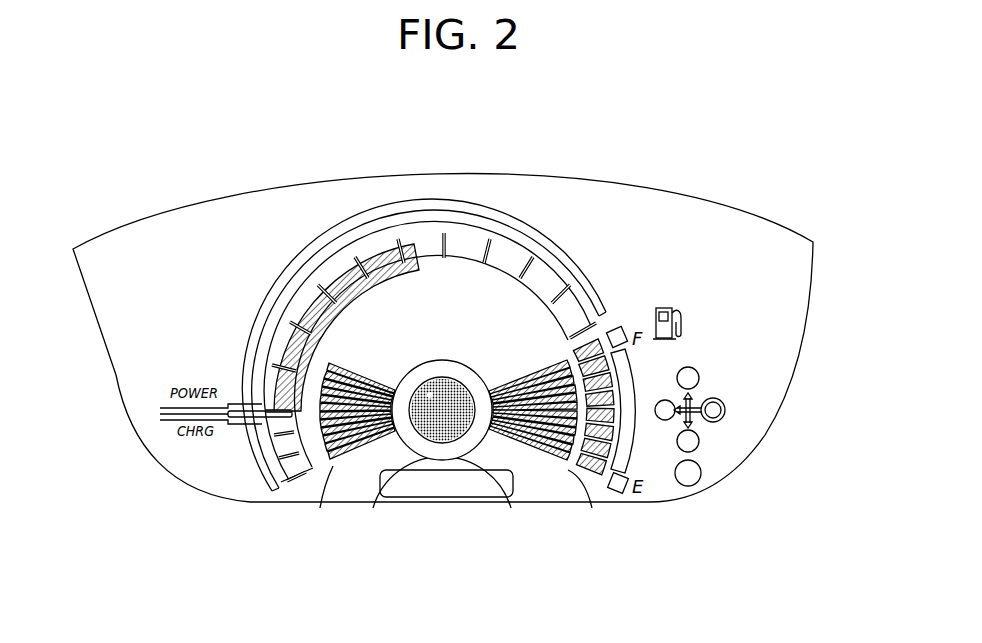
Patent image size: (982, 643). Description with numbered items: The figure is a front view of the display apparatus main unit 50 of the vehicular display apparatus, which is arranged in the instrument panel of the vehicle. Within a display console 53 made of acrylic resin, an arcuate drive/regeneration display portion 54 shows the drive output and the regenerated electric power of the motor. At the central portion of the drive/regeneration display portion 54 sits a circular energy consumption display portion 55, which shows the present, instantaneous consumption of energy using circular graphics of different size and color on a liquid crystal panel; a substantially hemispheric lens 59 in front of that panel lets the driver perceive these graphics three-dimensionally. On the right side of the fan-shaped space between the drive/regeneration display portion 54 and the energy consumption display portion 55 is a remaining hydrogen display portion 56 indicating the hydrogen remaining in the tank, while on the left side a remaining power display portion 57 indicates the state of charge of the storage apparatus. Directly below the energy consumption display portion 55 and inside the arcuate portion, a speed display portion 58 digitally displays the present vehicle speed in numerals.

The display apparatus main unit 50 is at (654, 184).
The display console 53 is at (752, 380).
The drive/regeneration display portion 54 is at (377, 250).
The energy consumption display portion 55 is at (408, 430).
The remaining hydrogen display portion 56 is at (572, 470).
The remaining power display portion 57 is at (332, 468).
The speed display portion 58 is at (433, 492).
The lens 59 is at (478, 430).